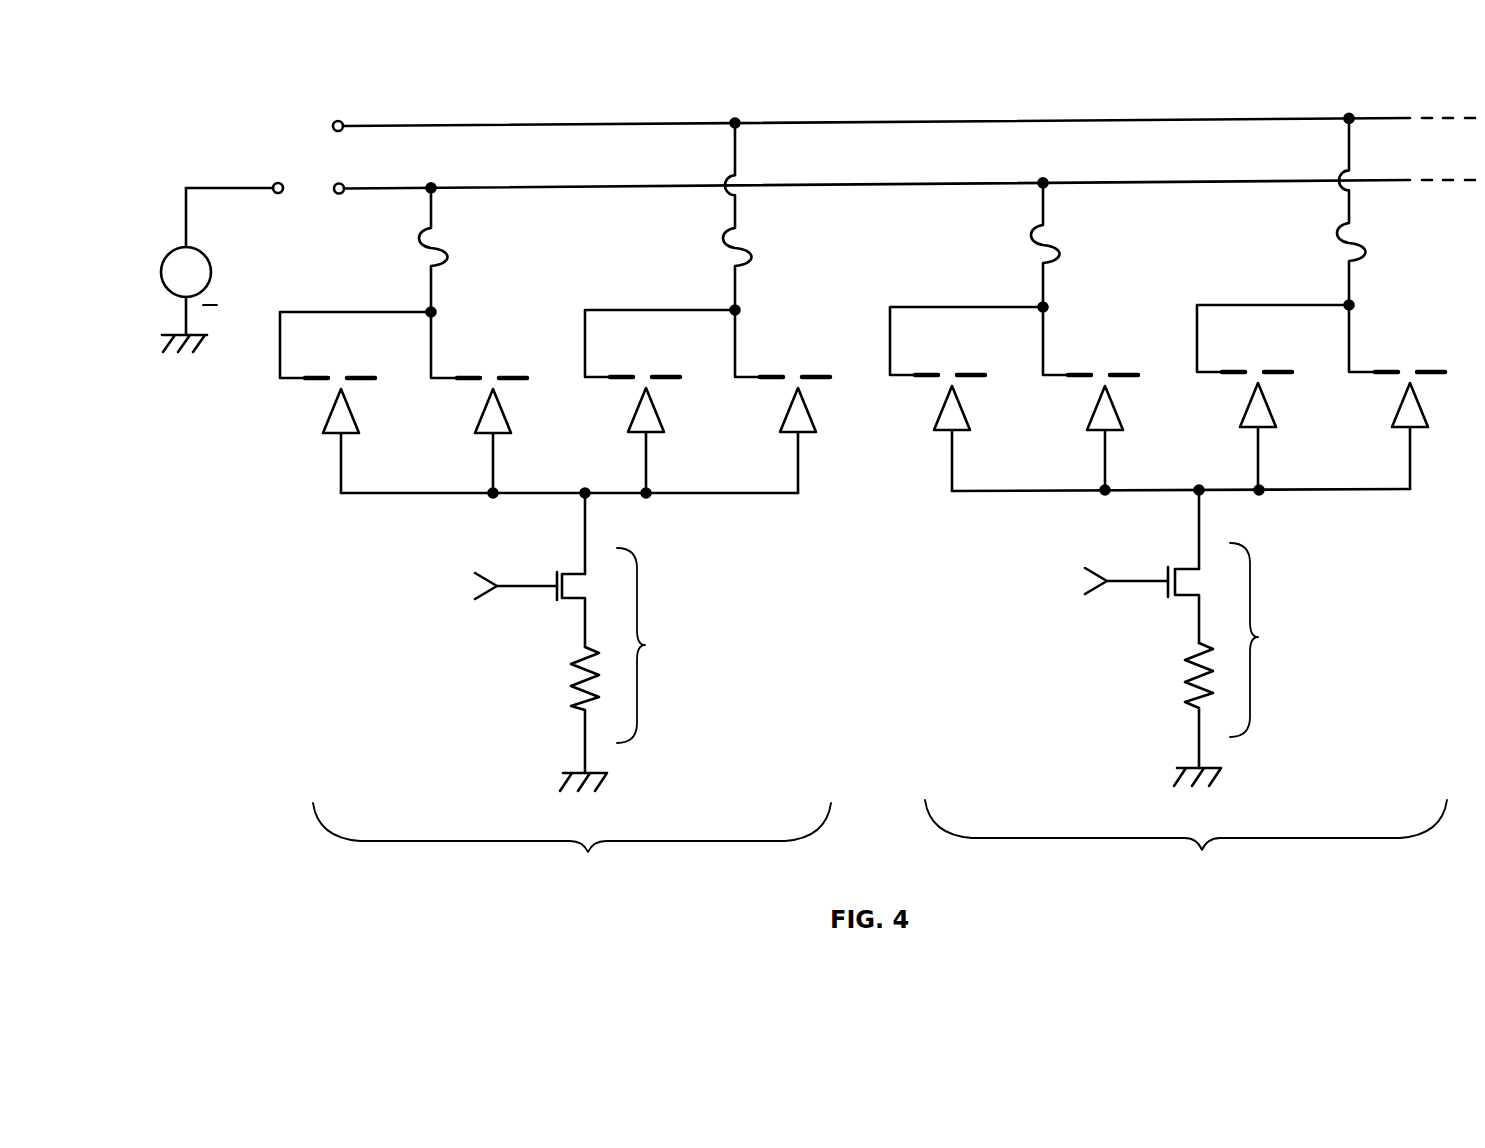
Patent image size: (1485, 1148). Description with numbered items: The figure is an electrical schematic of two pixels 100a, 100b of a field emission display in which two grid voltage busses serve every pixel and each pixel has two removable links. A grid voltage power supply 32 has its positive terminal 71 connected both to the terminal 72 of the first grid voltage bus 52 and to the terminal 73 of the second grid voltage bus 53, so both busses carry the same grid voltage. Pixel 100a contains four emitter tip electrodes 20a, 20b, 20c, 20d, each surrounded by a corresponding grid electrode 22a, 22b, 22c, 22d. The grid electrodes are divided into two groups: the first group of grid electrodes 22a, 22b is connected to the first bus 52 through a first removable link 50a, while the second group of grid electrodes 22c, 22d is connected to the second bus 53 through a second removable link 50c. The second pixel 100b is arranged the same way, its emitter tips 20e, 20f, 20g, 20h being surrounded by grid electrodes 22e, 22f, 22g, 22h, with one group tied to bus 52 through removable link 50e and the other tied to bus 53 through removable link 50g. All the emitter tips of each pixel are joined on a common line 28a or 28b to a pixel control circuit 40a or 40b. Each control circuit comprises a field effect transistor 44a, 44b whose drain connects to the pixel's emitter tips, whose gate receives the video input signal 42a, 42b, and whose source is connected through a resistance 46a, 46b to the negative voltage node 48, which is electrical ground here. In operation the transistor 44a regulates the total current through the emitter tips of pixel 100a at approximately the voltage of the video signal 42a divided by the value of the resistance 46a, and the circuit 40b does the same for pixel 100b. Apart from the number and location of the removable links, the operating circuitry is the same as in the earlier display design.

The second grid voltage bus 53 is at (370, 124).
The first grid voltage bus 52 is at (370, 186).
The terminal 73 is at (335, 121).
The terminal 72 is at (343, 193).
The positive terminal 71 is at (274, 184).
The grid voltage power supply 32 is at (201, 285).
The first removable link 50a is at (425, 258).
The second removable link 50c is at (735, 252).
The removable link 50e is at (1043, 250).
The removable link 50g is at (1348, 247).
The grid electrode 22a is at (317, 374).
The grid electrode 22b is at (469, 374).
The grid electrode 22c is at (622, 373).
The grid electrode 22d is at (772, 373).
The grid electrode 22e is at (927, 371).
The grid electrode 22f is at (1080, 371).
The grid electrode 22g is at (1234, 368).
The grid electrode 22h is at (1387, 368).
The emitter tip electrode 20a is at (355, 415).
The emitter tip electrode 20b is at (507, 415).
The emitter tip electrode 20c is at (660, 414).
The emitter tip electrode 20d is at (812, 414).
The emitter tip electrode 20e is at (966, 412).
The emitter tip electrode 20f is at (1119, 412).
The emitter tip electrode 20g is at (1272, 409).
The emitter tip electrode 20h is at (1424, 409).
The common line 28a is at (712, 495).
The common line 28b is at (1325, 491).
The pixel control circuit 40a is at (550, 633).
The pixel control circuit 40b is at (1163, 629).
The video input signal 42a is at (483, 586).
The video input signal 42b is at (1095, 581).
The field effect transistor 44a is at (572, 602).
The field effect transistor 44b is at (1186, 598).
The resistance 46a is at (580, 673).
The resistance 46b is at (1194, 668).
The negative voltage node 48 is at (567, 775).
The pixel 100a is at (572, 844).
The pixel 100b is at (1186, 841).